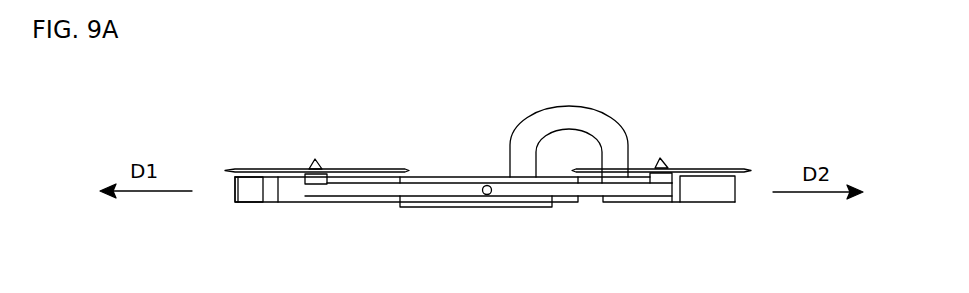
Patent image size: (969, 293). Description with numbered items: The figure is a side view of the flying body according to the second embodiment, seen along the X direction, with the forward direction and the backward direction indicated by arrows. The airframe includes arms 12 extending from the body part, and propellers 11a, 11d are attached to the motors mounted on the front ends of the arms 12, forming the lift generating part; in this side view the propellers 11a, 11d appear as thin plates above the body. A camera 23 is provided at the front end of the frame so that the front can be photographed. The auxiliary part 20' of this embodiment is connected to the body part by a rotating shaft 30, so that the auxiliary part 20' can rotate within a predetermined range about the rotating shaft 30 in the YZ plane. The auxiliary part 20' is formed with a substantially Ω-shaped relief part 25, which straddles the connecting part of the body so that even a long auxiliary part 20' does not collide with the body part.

The propeller 11a is at (660, 158).
The propeller 11d is at (313, 158).
The arm 12 is at (360, 192).
The auxiliary part 20' is at (707, 214).
The camera 23 is at (238, 203).
The relief part 25 is at (567, 118).
The rotating shaft 30 is at (488, 198).